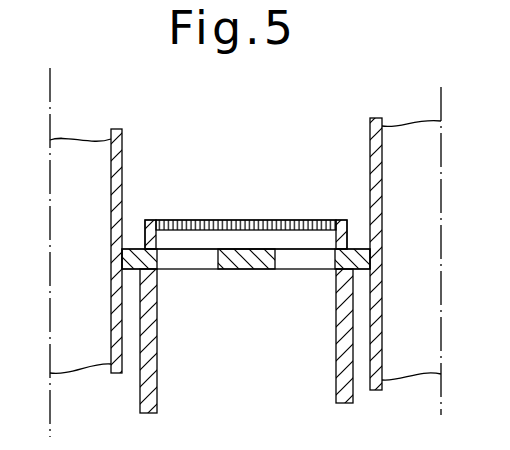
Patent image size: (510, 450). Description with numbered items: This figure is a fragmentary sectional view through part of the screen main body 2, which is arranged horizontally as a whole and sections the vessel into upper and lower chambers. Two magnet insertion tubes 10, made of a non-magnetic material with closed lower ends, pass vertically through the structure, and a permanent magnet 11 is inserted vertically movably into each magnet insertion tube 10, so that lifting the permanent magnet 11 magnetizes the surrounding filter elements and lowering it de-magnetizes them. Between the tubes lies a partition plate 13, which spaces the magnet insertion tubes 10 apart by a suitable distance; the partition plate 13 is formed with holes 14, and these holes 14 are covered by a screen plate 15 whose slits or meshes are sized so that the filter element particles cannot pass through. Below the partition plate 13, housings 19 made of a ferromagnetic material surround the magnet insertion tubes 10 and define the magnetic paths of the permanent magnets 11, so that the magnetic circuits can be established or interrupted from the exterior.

The screen main body 2 is at (392, 200).
The magnet insertion tube 10 is at (118, 141).
The permanent magnet 11 is at (85, 358).
The partition plate 13 is at (249, 270).
The hole 14 is at (217, 262).
The screen plate 15 is at (287, 218).
The housing 19 is at (157, 393).